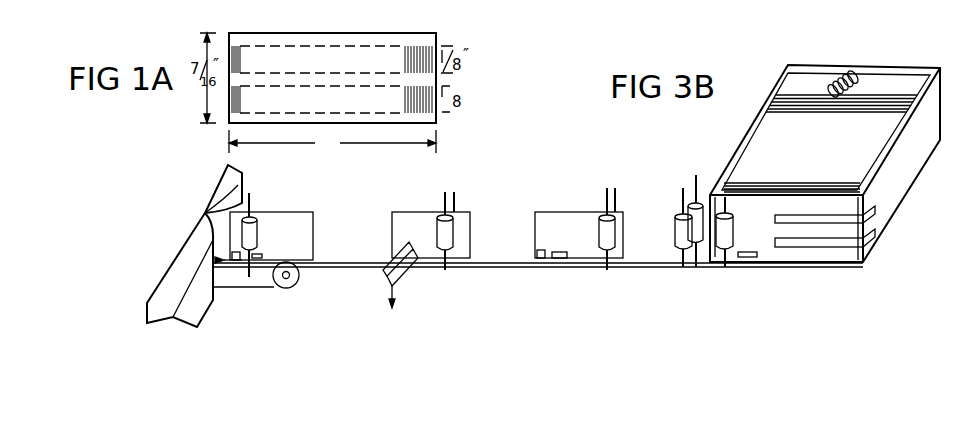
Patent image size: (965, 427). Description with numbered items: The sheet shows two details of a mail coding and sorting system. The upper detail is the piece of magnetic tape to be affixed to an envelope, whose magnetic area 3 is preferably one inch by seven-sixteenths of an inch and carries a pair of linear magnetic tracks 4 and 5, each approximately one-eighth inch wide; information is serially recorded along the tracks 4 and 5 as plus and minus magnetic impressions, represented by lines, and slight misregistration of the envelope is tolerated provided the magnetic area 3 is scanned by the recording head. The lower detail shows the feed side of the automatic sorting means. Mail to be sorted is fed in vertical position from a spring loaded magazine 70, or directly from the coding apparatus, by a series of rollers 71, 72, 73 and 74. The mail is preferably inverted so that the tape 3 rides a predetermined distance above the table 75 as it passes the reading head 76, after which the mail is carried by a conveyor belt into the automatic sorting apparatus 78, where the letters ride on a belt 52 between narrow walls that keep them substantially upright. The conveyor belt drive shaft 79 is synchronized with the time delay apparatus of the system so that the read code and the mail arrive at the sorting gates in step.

In FIG. 1A, the magnetic area 3 is at (292, 32).
In FIG. 3B, the magnetic area 3 is at (566, 252).
In FIG. 1A, the magnetic track 4 is at (355, 43).
In FIG. 1A, the magnetic track 5 is at (367, 113).
In FIG. 3B, the belt 52 is at (266, 288).
In FIG. 3B, the spring loaded magazine 70 is at (907, 193).
In FIG. 3B, the roller 71 is at (731, 258).
In FIG. 3B, the roller 72 is at (676, 243).
In FIG. 3B, the roller 73 is at (690, 203).
In FIG. 3B, the roller 74 is at (455, 238).
In FIG. 3B, the table 75 is at (527, 268).
In FIG. 3B, the reading head 76 is at (398, 282).
In FIG. 3B, the automatic sorting apparatus 78 is at (213, 296).
In FIG. 3B, the conveyor belt drive shaft 79 is at (288, 279).